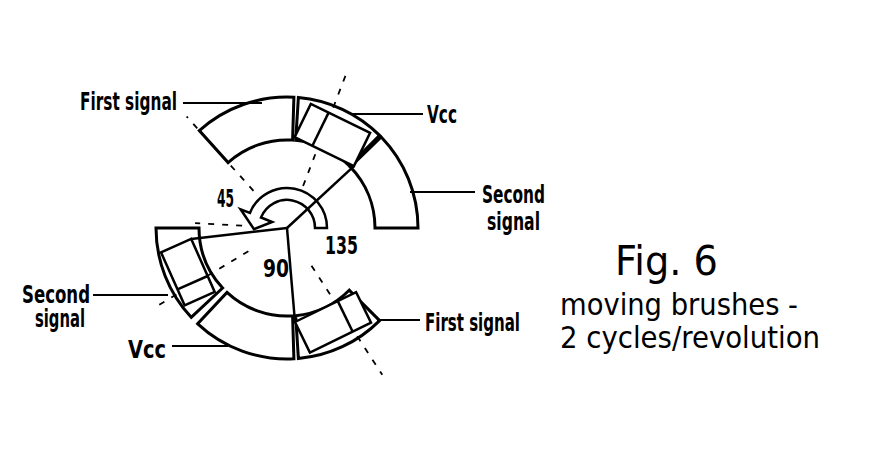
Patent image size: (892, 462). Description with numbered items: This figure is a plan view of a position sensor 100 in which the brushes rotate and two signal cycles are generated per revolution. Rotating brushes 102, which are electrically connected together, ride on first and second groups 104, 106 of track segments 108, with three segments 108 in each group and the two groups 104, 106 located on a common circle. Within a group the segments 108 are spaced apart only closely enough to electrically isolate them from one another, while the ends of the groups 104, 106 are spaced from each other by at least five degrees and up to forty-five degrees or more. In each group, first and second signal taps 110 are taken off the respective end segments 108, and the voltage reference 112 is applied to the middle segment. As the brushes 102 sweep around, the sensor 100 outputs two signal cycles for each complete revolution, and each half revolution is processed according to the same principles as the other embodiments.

The sensor 100 is at (147, 178).
The rotating brushes 102 is at (352, 110).
The first group of track segments 104 is at (328, 116).
The second group of track segments 106 is at (257, 373).
The track segments 108 is at (265, 102).
The signal taps 110 is at (203, 103).
The voltage reference 112 is at (406, 116).